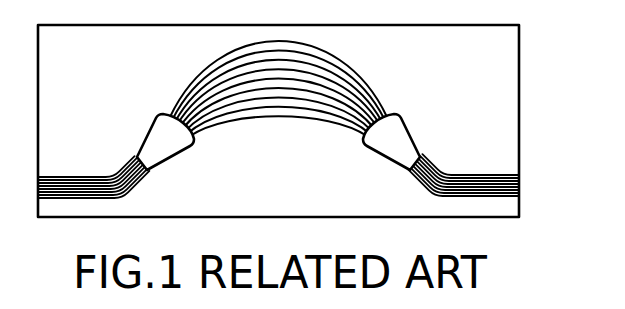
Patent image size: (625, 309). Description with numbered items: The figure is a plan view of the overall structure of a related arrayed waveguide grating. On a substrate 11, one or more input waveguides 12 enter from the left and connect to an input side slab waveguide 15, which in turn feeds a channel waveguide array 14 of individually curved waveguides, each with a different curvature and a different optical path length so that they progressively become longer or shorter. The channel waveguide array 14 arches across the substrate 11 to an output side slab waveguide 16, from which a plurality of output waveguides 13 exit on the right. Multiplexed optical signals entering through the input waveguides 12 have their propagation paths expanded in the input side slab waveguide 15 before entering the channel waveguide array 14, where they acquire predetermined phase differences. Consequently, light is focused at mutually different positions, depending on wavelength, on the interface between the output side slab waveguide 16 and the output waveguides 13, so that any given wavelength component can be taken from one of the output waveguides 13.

The substrate 11 is at (519, 90).
The input waveguides 12 is at (80, 177).
The output waveguides 13 is at (477, 172).
The channel waveguide array 14 is at (328, 52).
The input side slab waveguide 15 is at (152, 132).
The output side slab waveguide 16 is at (412, 130).